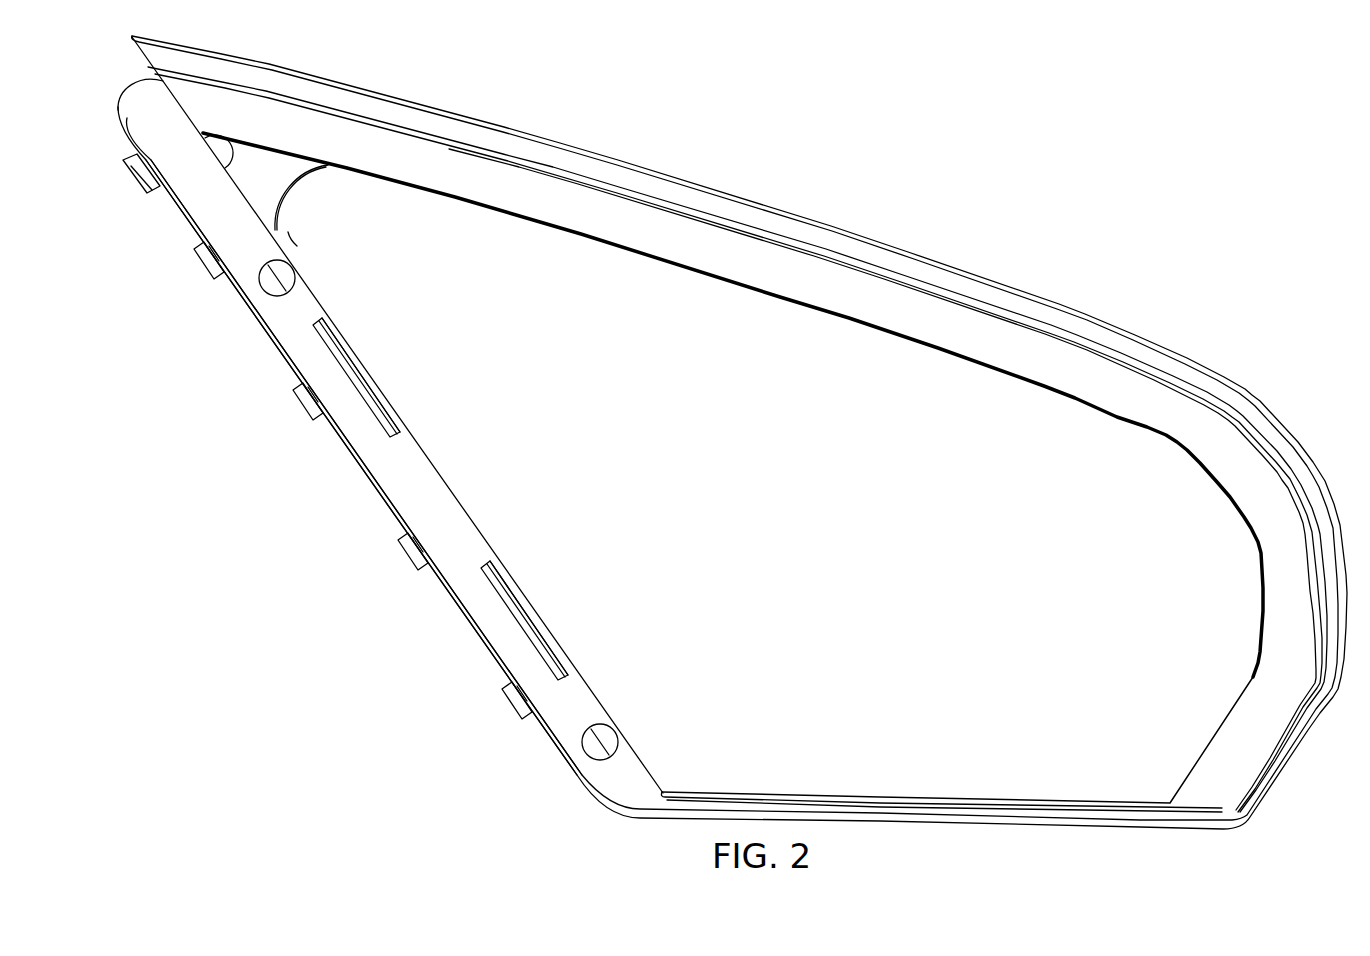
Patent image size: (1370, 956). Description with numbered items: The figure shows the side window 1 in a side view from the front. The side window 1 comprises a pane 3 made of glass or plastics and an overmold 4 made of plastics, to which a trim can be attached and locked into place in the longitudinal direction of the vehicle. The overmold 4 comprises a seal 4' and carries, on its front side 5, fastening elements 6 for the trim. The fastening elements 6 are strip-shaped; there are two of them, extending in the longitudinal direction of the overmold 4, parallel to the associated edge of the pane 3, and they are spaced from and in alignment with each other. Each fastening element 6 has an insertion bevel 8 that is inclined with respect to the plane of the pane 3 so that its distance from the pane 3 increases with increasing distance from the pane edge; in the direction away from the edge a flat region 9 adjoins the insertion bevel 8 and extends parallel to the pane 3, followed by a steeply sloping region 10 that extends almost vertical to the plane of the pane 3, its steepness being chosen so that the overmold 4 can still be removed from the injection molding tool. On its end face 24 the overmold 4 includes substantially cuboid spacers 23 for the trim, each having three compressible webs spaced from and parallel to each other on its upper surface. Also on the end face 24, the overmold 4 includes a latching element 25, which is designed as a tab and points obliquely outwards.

The side window 1 is at (943, 173).
The pane 3 is at (668, 282).
The overmold 4 is at (129, 96).
The seal 4' is at (328, 237).
The front side 5 is at (187, 192).
The fastening elements 6 is at (377, 415).
The insertion bevel 8 is at (330, 337).
The flat region 9 is at (357, 362).
The steeply sloping region 10 is at (383, 407).
The spacers 23 is at (217, 270).
The end face 24 is at (380, 500).
The latching element 25 is at (132, 177).